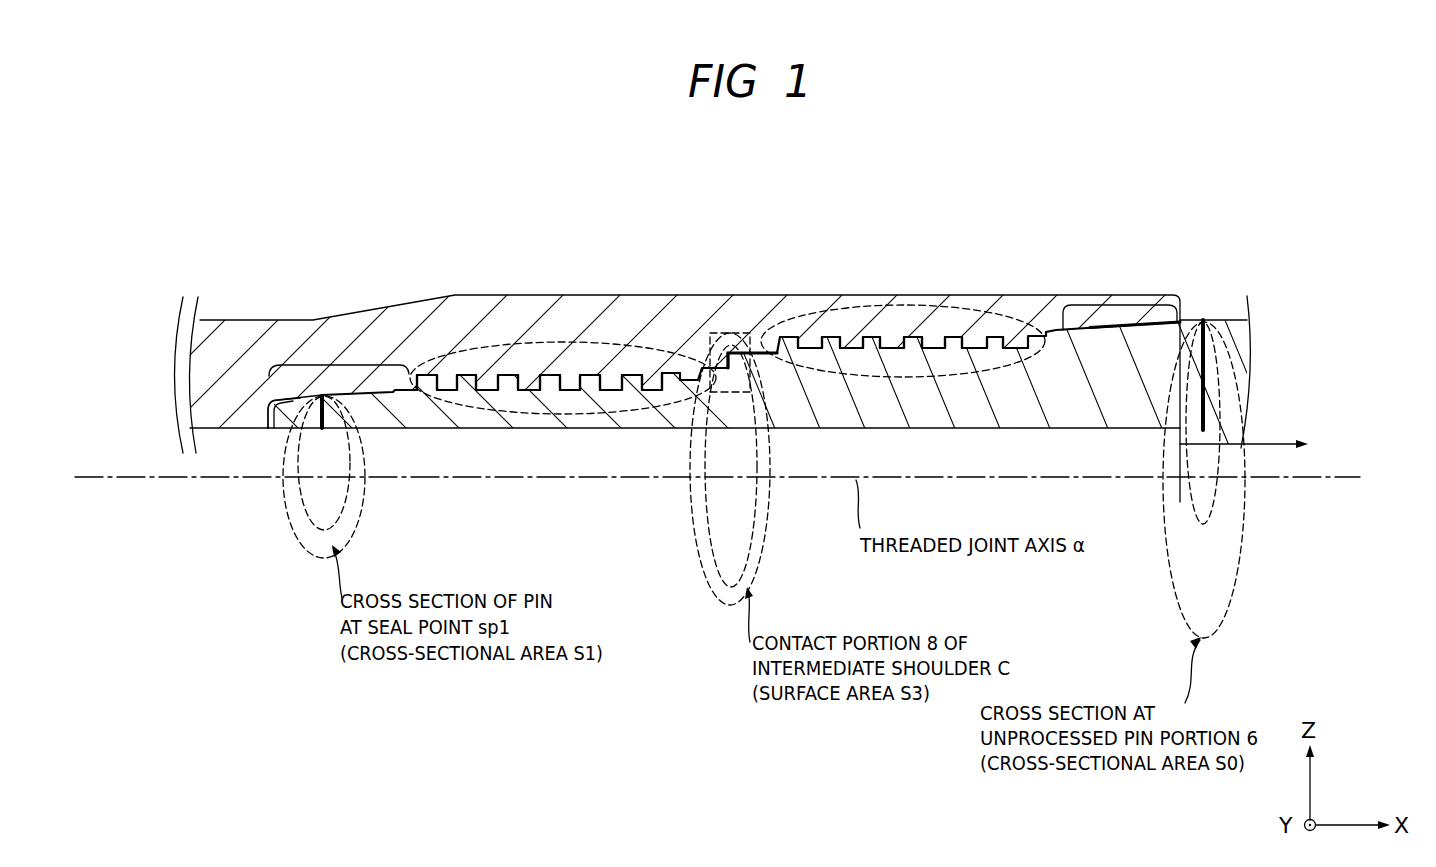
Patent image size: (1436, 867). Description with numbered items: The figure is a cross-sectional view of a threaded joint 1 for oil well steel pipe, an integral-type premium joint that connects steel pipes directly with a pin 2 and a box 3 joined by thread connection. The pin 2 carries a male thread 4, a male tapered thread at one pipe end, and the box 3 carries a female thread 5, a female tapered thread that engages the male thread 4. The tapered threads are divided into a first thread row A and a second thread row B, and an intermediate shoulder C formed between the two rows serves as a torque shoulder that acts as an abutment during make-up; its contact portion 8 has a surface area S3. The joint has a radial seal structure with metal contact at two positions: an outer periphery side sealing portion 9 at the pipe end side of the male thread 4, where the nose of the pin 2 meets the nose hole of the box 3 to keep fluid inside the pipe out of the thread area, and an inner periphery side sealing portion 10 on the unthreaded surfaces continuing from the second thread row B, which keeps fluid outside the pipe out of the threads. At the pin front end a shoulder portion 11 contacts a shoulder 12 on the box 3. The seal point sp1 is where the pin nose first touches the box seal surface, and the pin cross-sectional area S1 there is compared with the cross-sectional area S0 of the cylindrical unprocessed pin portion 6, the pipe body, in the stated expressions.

The threaded joint for oil well steel pipe 1 is at (950, 172).
The pin 2 is at (907, 400).
The box 3 is at (424, 312).
The male thread 4 is at (505, 380).
The female thread 5 is at (492, 385).
The unprocessed pin portion 6 is at (1295, 480).
The contact portion 8 is at (738, 352).
The outer periphery side sealing portion 9 is at (345, 365).
The inner periphery side sealing portion 10 is at (1120, 305).
The shoulder portion 11 is at (285, 430).
The shoulder 12 is at (268, 420).
The first thread row A is at (548, 342).
The second thread row B is at (942, 305).
The intermediate shoulder C is at (716, 333).
The seal point sp1 is at (322, 388).